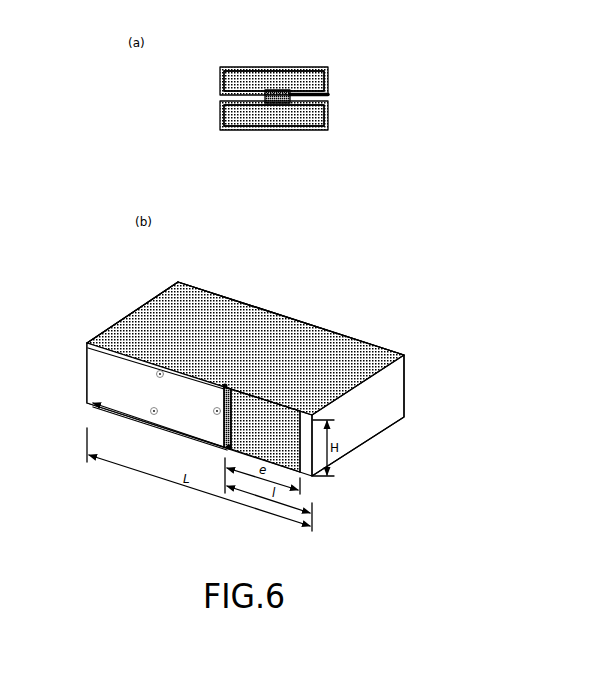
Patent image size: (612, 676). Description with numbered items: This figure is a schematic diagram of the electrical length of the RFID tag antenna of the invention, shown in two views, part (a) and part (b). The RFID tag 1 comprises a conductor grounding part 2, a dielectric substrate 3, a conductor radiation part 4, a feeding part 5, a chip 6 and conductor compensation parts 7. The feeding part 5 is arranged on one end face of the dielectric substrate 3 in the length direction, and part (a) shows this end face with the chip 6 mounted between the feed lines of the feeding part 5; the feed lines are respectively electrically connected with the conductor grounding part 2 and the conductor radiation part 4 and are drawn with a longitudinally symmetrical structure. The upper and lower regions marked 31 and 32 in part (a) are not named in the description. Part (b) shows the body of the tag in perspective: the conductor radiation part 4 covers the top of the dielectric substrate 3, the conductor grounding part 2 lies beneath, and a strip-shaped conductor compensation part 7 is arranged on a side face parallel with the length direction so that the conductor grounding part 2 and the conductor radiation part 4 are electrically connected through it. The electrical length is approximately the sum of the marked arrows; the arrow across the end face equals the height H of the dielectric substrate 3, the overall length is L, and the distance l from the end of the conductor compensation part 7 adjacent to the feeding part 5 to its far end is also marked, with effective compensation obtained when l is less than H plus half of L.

The RFID tag 1 is at (280, 259).
The conductor grounding part 2 is at (93, 409).
The dielectric substrate 3 is at (208, 146).
The first electrode portion 31 is at (310, 78).
The second electrode portion 32 is at (311, 117).
The conductor radiation part 4 is at (268, 342).
The feeding part 5 is at (166, 284).
The chip 6 is at (268, 92).
The conductor compensation part 7 is at (371, 333).